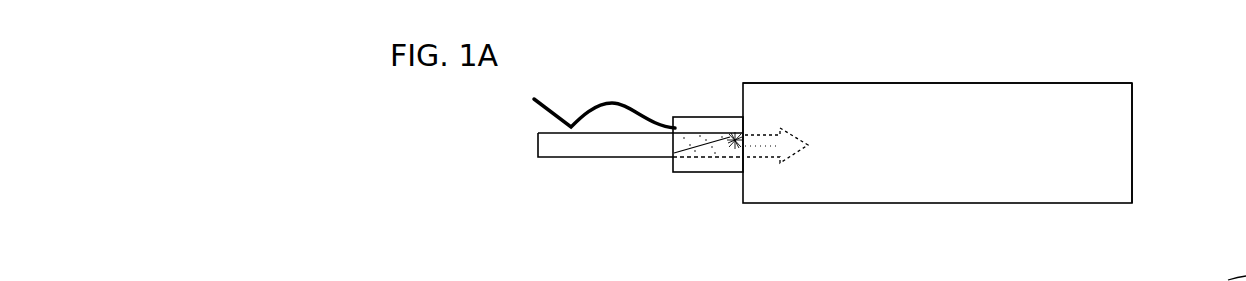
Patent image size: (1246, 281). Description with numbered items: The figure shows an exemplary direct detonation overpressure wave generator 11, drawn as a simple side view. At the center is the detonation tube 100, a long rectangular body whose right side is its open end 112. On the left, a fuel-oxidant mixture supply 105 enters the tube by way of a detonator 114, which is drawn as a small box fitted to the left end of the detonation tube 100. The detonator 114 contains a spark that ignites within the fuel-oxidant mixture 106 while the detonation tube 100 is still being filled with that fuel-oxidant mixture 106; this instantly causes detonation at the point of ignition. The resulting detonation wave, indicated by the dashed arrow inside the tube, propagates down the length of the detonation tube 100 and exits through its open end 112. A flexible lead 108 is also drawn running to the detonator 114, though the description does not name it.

The detonation tube 100 is at (965, 83).
The overpressure wave generator 11 is at (810, 61).
The fuel-oxidant mixture 106 is at (1050, 95).
The open end 112 is at (1133, 128).
The detonator 114 is at (702, 125).
The fuel-oxidant mixture supply 105 is at (618, 157).
The cable 108 is at (545, 103).